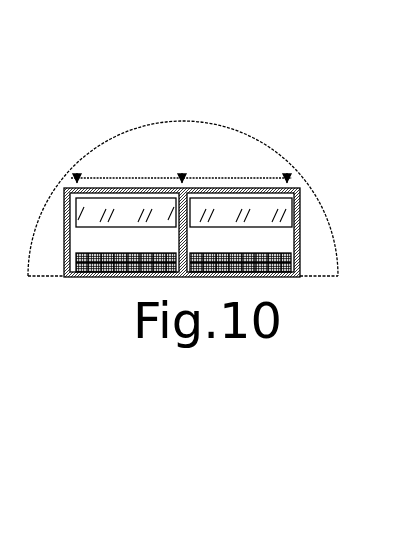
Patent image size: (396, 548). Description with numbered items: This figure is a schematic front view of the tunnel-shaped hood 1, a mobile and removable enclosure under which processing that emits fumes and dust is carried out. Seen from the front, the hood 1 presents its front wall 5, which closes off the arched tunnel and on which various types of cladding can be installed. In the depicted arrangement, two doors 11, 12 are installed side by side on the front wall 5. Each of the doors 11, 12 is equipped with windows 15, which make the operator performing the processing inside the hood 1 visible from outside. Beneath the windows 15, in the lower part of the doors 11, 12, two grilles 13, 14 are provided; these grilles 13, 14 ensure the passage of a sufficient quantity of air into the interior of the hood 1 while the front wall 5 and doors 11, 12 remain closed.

The hood 1 is at (283, 155).
The front wall 5 is at (112, 165).
The door 11 is at (77, 235).
The door 12 is at (283, 243).
The grille 13 is at (108, 272).
The grille 14 is at (290, 273).
The windows 15 is at (132, 205).